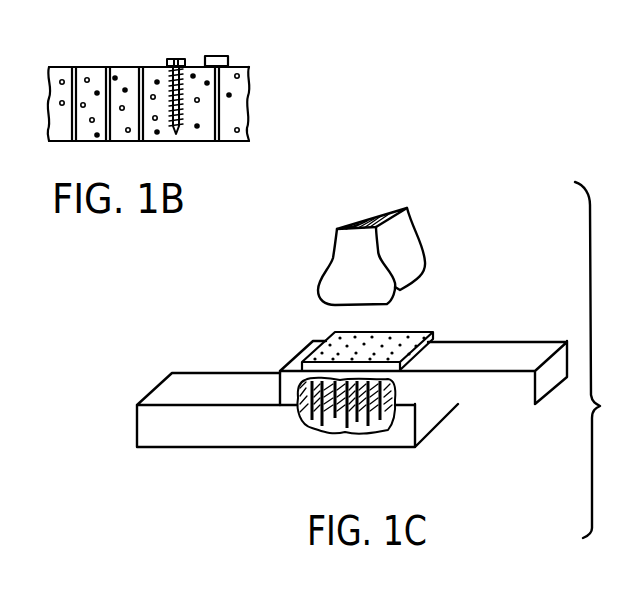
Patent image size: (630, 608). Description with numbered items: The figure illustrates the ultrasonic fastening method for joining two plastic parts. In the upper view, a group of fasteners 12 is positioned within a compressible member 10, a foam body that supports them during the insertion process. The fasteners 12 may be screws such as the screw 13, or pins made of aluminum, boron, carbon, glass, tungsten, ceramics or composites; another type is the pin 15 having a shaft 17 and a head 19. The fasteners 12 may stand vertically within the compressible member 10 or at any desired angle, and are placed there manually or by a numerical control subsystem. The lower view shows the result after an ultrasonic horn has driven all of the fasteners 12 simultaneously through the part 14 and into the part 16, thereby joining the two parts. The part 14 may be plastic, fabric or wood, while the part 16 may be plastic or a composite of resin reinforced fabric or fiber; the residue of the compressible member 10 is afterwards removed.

In FIG. 1B, the compressible member 10 is at (240, 130).
In FIG. 1C, the compressible member 10 is at (424, 330).
In FIG. 1B, the fasteners 12 is at (145, 80).
In FIG. 1C, the fasteners 12 is at (322, 426).
In FIG. 1B, the screw 13 is at (180, 128).
In FIG. 1C, the part 14 is at (522, 347).
In FIG. 1B, the pin 15 is at (214, 52).
In FIG. 1C, the part 16 is at (441, 420).
In FIG. 1B, the shaft 17 is at (220, 111).
In FIG. 1B, the head 19 is at (228, 58).